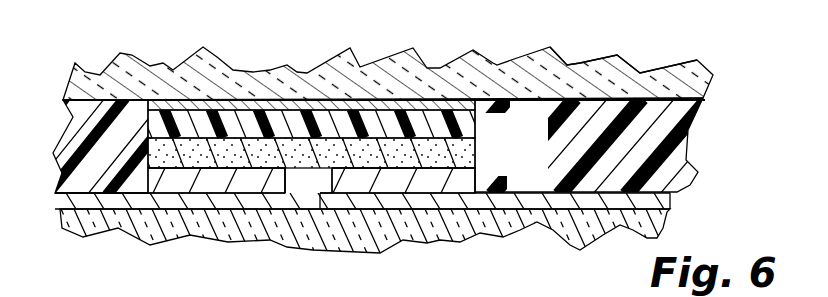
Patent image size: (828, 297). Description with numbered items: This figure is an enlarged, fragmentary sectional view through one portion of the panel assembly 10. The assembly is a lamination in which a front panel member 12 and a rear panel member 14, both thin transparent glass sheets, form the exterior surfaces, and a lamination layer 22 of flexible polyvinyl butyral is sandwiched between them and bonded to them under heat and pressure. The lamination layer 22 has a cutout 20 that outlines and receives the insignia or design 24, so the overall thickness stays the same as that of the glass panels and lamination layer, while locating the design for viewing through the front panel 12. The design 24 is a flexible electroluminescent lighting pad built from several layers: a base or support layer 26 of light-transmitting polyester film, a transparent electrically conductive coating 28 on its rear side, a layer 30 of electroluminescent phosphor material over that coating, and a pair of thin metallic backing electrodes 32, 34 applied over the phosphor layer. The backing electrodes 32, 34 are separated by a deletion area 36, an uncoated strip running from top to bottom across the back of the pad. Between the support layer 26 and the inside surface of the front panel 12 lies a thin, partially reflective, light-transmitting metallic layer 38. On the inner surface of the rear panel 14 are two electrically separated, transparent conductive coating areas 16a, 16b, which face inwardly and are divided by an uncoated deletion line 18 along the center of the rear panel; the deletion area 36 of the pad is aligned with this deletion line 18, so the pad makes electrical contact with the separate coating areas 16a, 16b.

The panel assembly 10 is at (644, 65).
The front panel member 12 is at (497, 66).
The rear panel member 14 is at (583, 241).
The electrically conductive coating area 16a is at (90, 200).
The electrically conductive coating area 16b is at (665, 200).
The deletion line 18 is at (328, 205).
The cutout 20 is at (175, 98).
The lamination layer 22 is at (683, 118).
The electroluminescent lighting assembly 24 is at (357, 95).
The base or support layer 26 is at (463, 127).
The transparent electrically conductive coating 28 is at (462, 156).
The electroluminescent phosphor layer 30 is at (468, 163).
The backing electrode 32 is at (222, 183).
The backing electrode 34 is at (423, 183).
The deletion area 36 is at (303, 183).
The metallic layer 38 is at (307, 100).